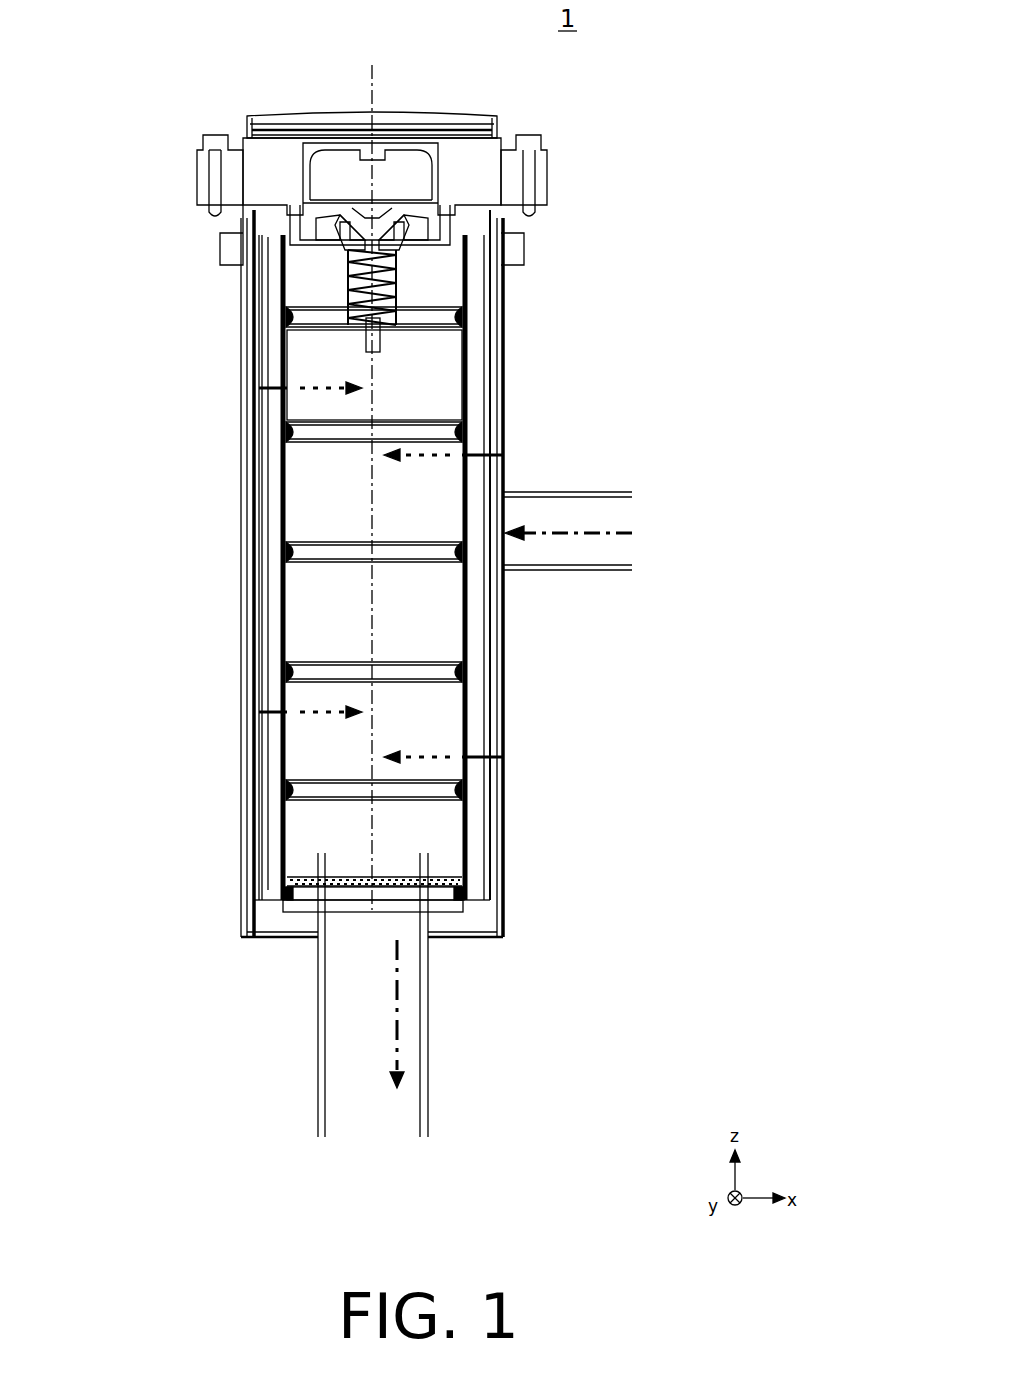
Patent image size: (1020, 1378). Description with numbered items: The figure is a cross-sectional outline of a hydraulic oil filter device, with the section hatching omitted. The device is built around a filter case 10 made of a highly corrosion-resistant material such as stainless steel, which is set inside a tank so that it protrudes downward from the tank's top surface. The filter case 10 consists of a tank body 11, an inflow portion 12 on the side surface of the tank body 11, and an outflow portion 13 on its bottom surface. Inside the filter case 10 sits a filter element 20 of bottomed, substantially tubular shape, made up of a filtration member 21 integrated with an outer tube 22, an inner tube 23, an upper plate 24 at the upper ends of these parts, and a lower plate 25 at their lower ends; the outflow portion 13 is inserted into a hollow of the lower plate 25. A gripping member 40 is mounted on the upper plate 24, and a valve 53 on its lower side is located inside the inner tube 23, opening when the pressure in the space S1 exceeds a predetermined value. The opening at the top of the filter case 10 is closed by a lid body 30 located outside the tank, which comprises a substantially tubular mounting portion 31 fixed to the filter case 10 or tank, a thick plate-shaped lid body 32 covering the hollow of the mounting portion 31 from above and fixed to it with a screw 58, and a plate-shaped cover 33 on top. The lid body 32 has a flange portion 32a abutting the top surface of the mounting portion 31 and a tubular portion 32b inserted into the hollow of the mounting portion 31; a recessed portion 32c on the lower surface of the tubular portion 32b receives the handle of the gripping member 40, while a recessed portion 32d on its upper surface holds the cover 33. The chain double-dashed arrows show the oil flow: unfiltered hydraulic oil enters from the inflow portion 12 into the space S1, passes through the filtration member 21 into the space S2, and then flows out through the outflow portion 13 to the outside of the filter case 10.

The filter case 10 is at (477, 673).
The tank body 11 is at (435, 573).
The inflow portion 12 is at (578, 504).
The outflow portion 13 is at (416, 995).
The filter element 20 is at (271, 573).
The filtration member 21 is at (309, 567).
The outer tube 22 is at (207, 567).
The inner tube 23 is at (307, 457).
The upper plate 24 is at (210, 563).
The lower plate 25 is at (308, 754).
The lid body 30 is at (404, 150).
The mounting portion 31 is at (468, 206).
The lid body 32 is at (370, 150).
The flange portion 32a is at (321, 196).
The tubular portion 32b is at (317, 148).
The recessed portion 32c is at (352, 119).
The recessed portion 32d is at (350, 87).
The cover 33 is at (446, 115).
The gripping member 40 is at (453, 191).
The valve 53 is at (469, 290).
The screw 58 is at (177, 205).
The space S1 is at (562, 935).
The space S2 is at (535, 858).